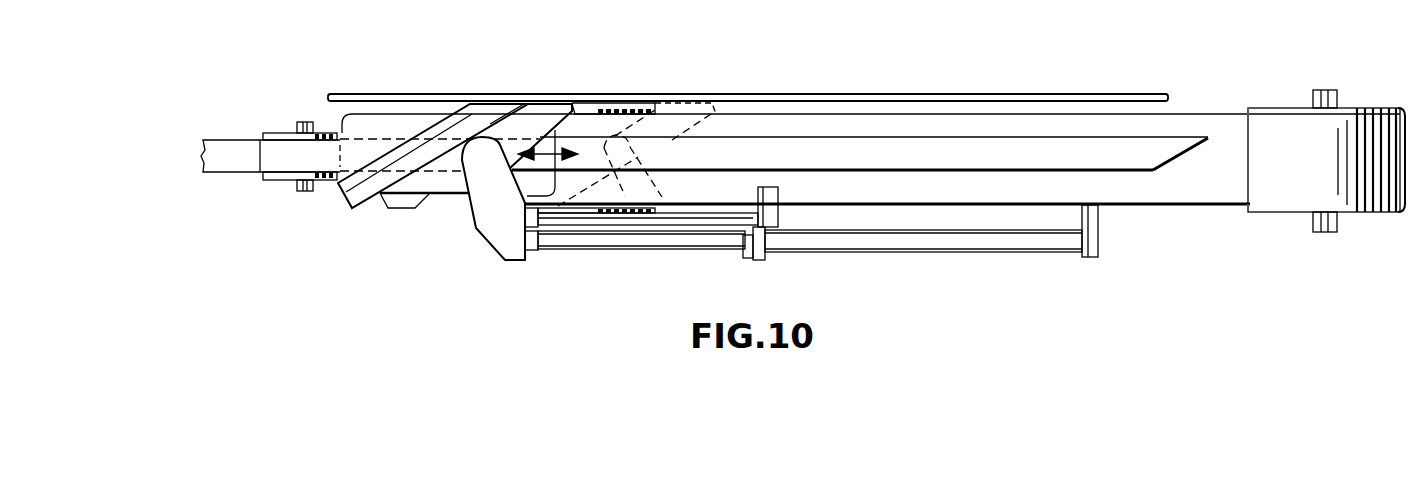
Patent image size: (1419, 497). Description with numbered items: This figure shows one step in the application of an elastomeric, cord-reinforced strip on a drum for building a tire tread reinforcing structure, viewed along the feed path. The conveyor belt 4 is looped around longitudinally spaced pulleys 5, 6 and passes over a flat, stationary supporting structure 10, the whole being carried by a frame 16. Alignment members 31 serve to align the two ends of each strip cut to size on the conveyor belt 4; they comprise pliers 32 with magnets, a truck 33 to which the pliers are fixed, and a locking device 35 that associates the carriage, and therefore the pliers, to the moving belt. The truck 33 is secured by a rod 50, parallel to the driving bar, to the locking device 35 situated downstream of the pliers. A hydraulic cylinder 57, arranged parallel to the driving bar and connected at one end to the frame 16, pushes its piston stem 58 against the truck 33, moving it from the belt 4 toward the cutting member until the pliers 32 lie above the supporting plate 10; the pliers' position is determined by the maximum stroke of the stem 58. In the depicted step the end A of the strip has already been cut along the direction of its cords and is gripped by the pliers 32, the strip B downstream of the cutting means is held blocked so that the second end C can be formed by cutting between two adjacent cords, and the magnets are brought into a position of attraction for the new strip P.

The new strip P is at (237, 148).
The supporting structure 10 is at (392, 113).
The frame 16 is at (942, 95).
The conveyor belt 4 is at (1205, 122).
The strip B is at (787, 145).
The end of strip A is at (1177, 157).
The pulley 5 is at (1270, 212).
The second end of strip C is at (440, 153).
The pliers 32 is at (542, 110).
The pulley 6 is at (630, 110).
The truck 33 is at (497, 232).
The alignment members 31 is at (466, 178).
The rod 50 is at (682, 224).
The stem 58 is at (603, 249).
The locking device 35 is at (782, 210).
The hydraulic cylinder 57 is at (950, 253).